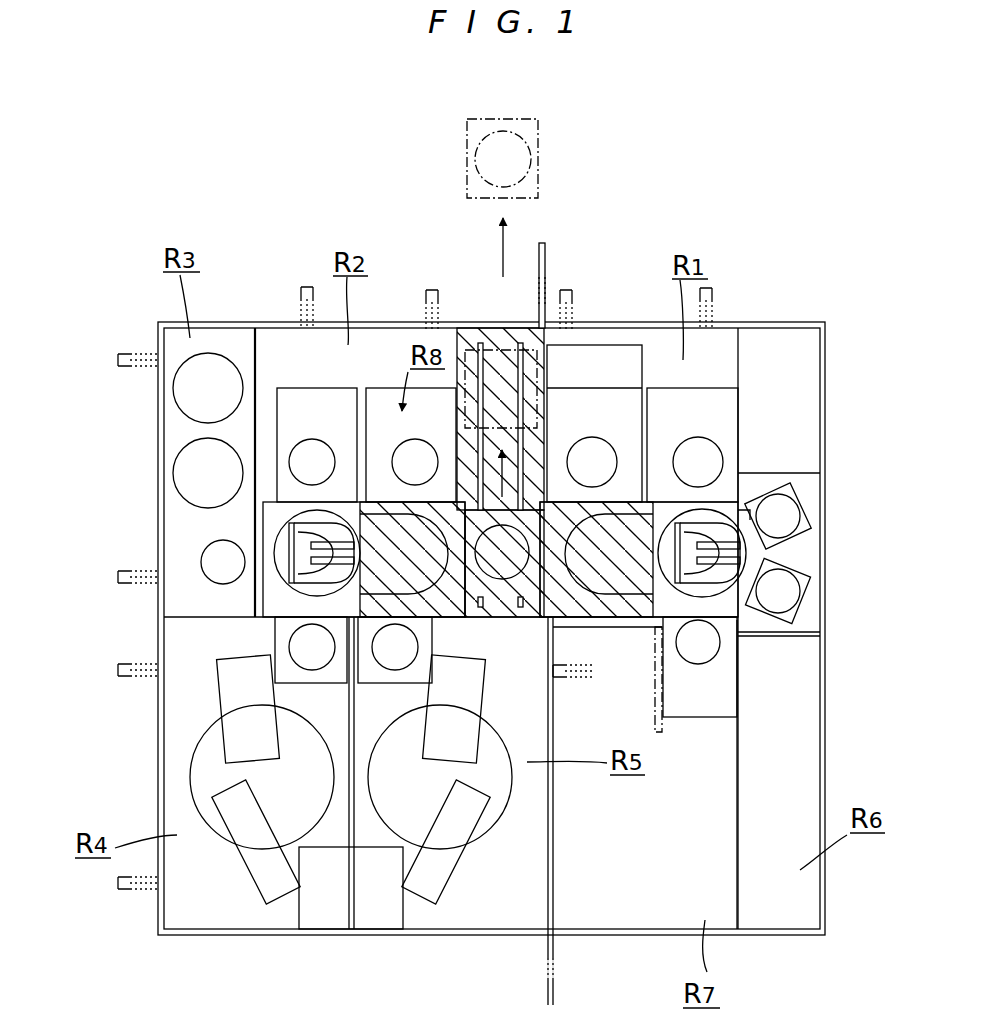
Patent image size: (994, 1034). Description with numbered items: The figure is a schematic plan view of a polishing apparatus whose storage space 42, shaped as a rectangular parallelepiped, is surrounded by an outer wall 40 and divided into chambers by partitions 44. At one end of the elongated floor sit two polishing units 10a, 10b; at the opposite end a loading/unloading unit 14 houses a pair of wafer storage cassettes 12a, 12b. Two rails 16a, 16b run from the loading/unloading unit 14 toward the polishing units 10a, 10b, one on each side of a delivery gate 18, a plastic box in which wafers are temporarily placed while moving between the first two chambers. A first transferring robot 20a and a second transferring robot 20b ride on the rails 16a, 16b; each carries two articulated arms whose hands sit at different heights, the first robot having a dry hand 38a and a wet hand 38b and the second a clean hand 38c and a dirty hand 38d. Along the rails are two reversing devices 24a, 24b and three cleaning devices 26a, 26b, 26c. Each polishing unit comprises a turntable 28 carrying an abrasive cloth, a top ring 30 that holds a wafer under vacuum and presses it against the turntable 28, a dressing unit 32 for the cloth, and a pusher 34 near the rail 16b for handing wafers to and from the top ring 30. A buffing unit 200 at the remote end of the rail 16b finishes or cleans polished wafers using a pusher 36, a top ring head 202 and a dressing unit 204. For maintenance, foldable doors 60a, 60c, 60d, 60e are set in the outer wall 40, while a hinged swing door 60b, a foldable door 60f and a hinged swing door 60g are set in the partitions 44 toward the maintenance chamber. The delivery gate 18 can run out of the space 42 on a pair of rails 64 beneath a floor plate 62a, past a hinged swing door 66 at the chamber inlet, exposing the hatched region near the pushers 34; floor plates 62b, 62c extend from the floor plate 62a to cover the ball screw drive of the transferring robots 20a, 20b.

The polishing unit 10a is at (511, 743).
The polishing unit 10b is at (213, 773).
The wafer storage cassette 12a is at (787, 505).
The wafer storage cassette 12b is at (787, 592).
The loading/unloading unit 14 is at (802, 553).
The rail 16a is at (632, 523).
The rail 16b is at (377, 517).
The delivery gate 18 is at (542, 132).
The first transferring robot 20a is at (710, 517).
The second transferring robot 20b is at (283, 542).
The reversing device 24a is at (690, 572).
The reversing device 24b is at (297, 415).
The cleaning device 26a is at (392, 400).
The cleaning device 26b is at (609, 398).
The cleaning device 26c is at (713, 398).
The turntable 28 is at (203, 793).
The top ring 30 is at (227, 690).
The dressing unit 32 is at (260, 870).
The pusher 34 is at (302, 642).
The pusher 36 is at (220, 557).
The dry hand 38a is at (742, 527).
The wet hand 38b is at (745, 568).
The clean hand 38c is at (293, 512).
The dirty hand 38d is at (383, 573).
The outer wall 40 is at (795, 323).
The storage space 42 is at (829, 319).
The partition 44 is at (737, 803).
The foldable doors 60a is at (717, 287).
The hinged swing door 60b is at (657, 733).
The foldable doors 60c is at (307, 287).
The foldable doors 60d is at (130, 355).
The foldable doors 60e is at (152, 893).
The foldable door 60f is at (567, 677).
The hinged swing door 60g is at (548, 985).
The floor plate 62a is at (458, 340).
The floor plate 62b is at (290, 612).
The floor plate 62c is at (723, 667).
The rails 64 is at (513, 359).
The hinged swing door 66 is at (546, 245).
The buffing unit 200 is at (166, 402).
The top ring head 202 is at (183, 472).
The dressing unit 204 is at (187, 405).